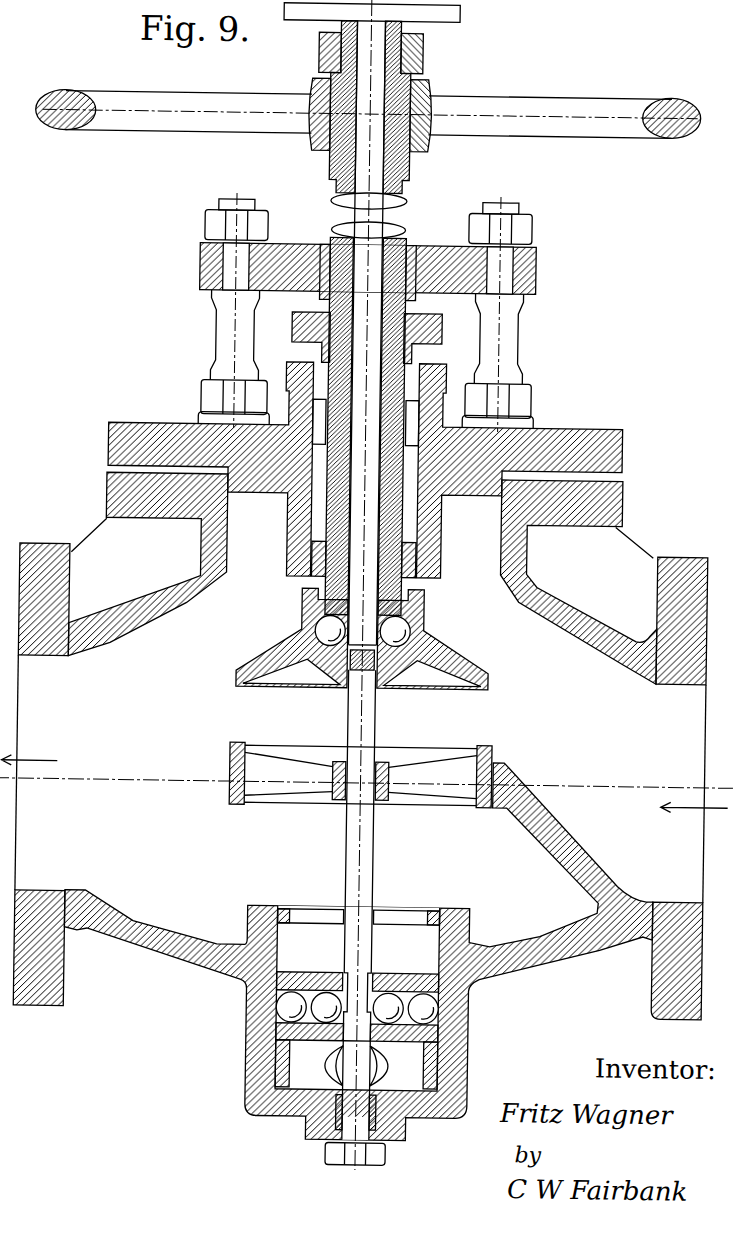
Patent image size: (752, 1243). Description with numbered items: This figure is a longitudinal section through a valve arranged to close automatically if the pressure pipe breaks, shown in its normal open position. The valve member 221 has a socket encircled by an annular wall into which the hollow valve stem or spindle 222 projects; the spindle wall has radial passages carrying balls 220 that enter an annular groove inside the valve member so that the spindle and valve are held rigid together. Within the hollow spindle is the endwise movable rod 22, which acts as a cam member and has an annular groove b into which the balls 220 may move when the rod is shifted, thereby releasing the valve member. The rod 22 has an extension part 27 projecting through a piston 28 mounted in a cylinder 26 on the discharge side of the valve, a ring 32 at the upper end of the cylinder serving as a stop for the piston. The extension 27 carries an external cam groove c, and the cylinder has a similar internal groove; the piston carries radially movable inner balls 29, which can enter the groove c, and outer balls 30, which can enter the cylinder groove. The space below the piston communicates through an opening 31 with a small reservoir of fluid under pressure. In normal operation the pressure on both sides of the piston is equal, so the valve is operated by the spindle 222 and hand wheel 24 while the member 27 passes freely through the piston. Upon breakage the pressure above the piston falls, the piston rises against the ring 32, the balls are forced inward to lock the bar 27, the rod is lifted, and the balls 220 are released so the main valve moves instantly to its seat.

The hand wheel 24 is at (693, 107).
The rod 22 is at (363, 585).
The valve stem or spindle 222 is at (393, 526).
The balls 220 is at (332, 630).
The valve member 221 is at (448, 656).
The annular groove b is at (367, 659).
The extension part 27 is at (358, 905).
The ring 32 is at (291, 913).
The cylinder 26 is at (466, 956).
The inner balls 29 is at (335, 1001).
The outer balls 30 is at (298, 1009).
The piston 28 is at (296, 1053).
The cam groove c is at (396, 1041).
The opening 31 is at (341, 1069).